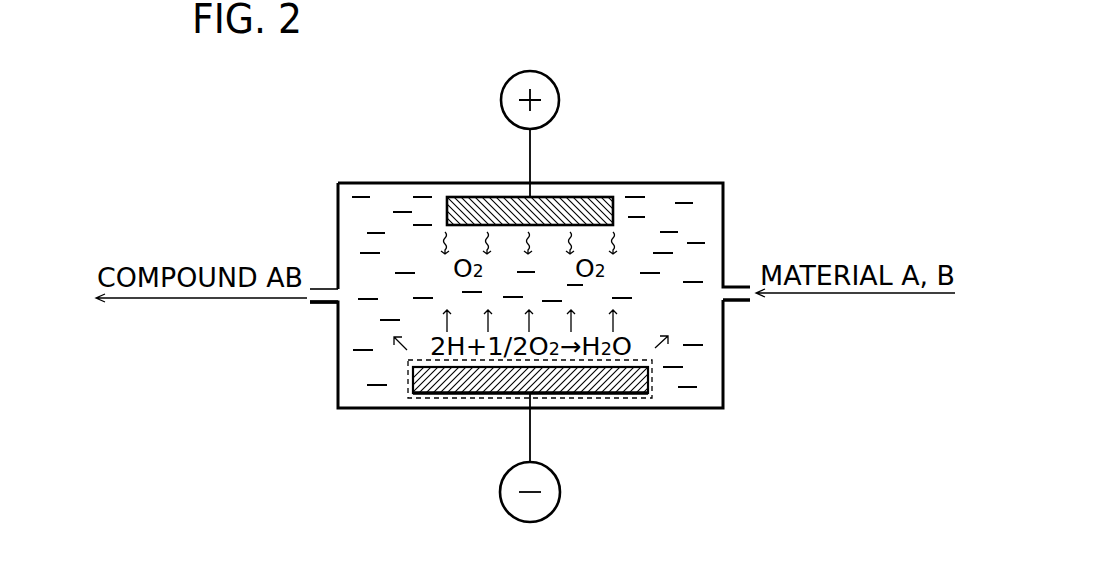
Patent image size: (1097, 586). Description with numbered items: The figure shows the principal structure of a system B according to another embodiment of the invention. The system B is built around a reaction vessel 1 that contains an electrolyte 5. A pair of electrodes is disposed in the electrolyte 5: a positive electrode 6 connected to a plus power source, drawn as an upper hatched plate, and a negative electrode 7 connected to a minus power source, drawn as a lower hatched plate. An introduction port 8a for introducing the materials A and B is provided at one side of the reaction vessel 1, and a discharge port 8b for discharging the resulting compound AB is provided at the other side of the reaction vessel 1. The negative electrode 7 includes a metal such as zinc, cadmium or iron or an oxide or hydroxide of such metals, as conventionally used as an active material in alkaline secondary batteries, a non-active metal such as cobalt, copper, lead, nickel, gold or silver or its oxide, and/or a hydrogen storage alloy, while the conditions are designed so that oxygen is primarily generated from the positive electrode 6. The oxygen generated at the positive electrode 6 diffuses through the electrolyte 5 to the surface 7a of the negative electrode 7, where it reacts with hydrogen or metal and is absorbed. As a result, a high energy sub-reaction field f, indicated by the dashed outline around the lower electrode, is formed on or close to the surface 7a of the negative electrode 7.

The reaction vessel 1 is at (368, 410).
The electrolyte 5 is at (388, 201).
The positive electrode 6 is at (595, 207).
The negative electrode 7 is at (625, 400).
The surface of the negative electrode 7a is at (633, 366).
The introduction port 8a is at (740, 303).
The discharge port 8b is at (320, 306).
The high energy sub-reaction field f is at (417, 399).
The system B is at (776, 197).